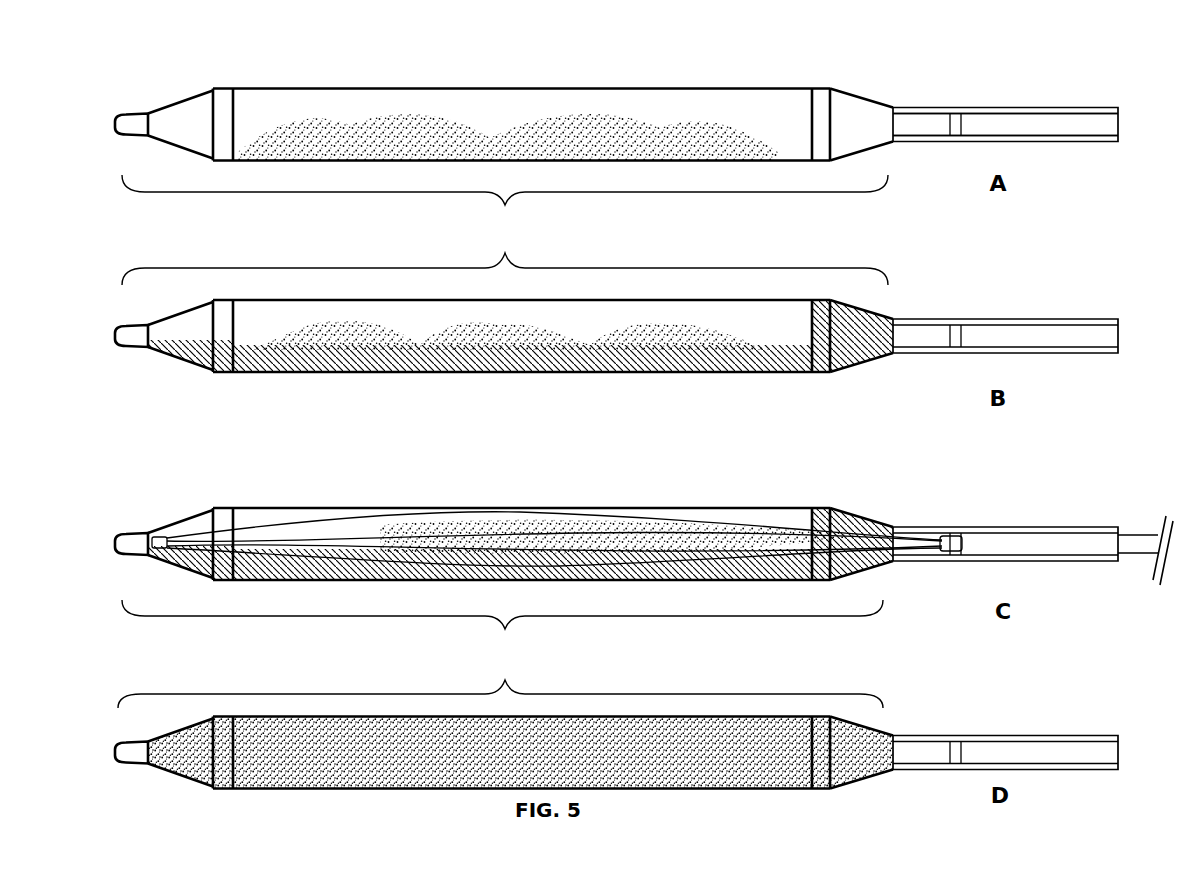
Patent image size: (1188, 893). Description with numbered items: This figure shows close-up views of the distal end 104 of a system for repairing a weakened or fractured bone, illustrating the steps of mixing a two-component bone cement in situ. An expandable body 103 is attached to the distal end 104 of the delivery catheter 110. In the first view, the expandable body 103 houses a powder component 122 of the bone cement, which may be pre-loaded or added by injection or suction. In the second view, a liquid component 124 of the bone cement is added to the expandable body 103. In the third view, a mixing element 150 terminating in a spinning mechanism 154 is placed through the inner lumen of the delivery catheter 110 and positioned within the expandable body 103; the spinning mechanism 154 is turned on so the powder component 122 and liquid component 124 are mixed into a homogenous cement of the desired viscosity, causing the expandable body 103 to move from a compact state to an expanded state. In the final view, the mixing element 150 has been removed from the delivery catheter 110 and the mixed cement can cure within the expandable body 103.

The expandable body 103 is at (503, 441).
The distal end 104 is at (902, 83).
The delivery catheter 110 is at (1023, 123).
The powder component 122 is at (562, 147).
The liquid component 124 is at (800, 578).
The mixing element 150 is at (1133, 542).
The spinning mechanism 154 is at (690, 536).